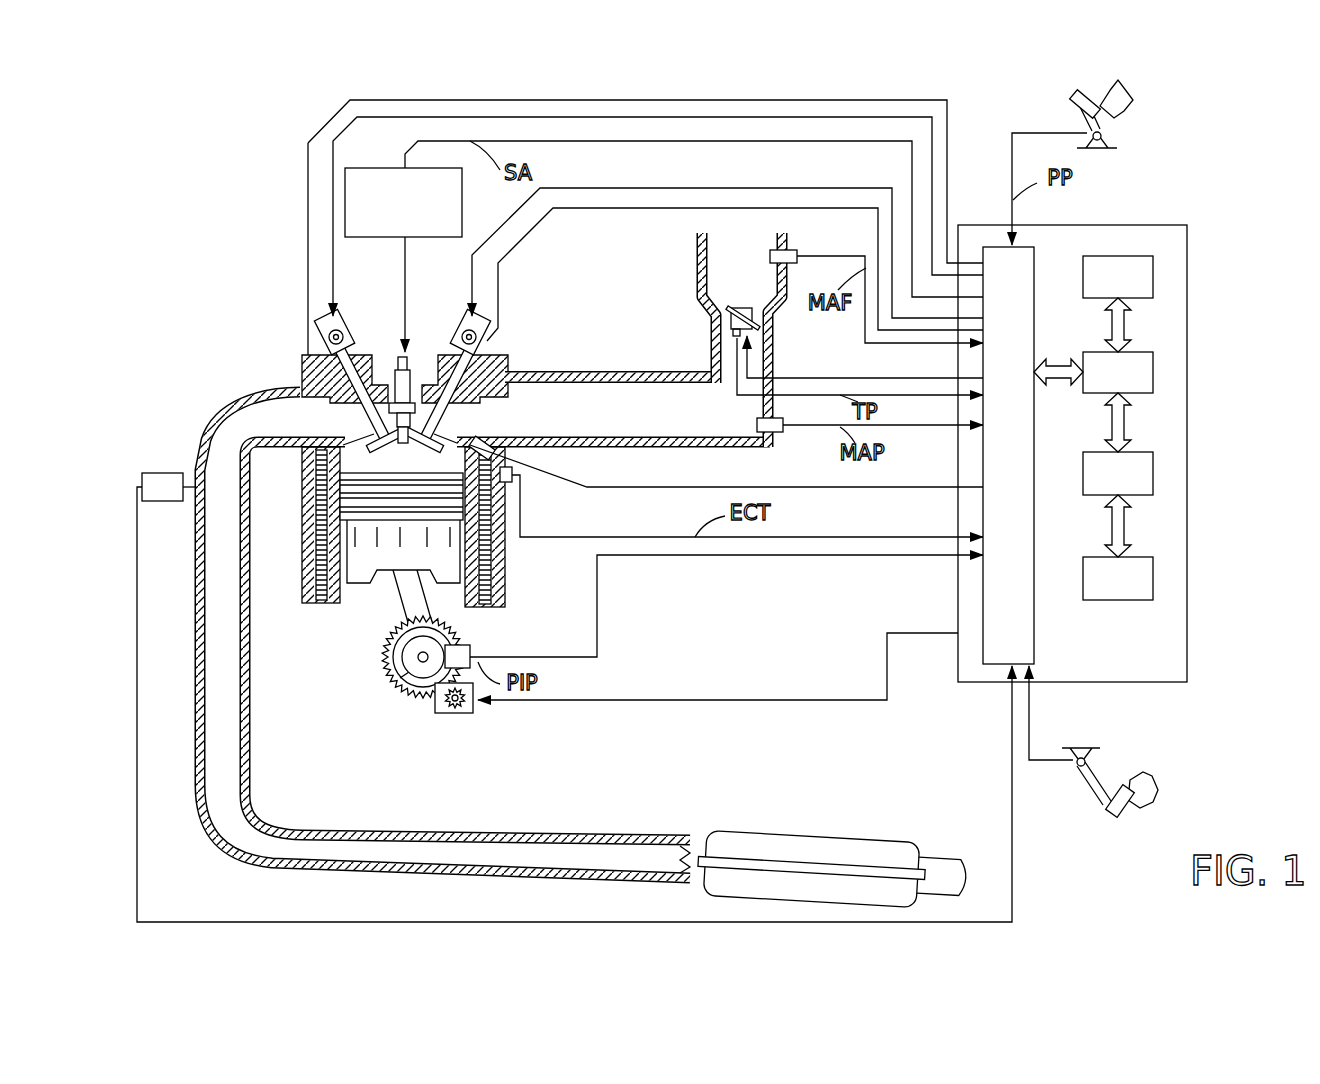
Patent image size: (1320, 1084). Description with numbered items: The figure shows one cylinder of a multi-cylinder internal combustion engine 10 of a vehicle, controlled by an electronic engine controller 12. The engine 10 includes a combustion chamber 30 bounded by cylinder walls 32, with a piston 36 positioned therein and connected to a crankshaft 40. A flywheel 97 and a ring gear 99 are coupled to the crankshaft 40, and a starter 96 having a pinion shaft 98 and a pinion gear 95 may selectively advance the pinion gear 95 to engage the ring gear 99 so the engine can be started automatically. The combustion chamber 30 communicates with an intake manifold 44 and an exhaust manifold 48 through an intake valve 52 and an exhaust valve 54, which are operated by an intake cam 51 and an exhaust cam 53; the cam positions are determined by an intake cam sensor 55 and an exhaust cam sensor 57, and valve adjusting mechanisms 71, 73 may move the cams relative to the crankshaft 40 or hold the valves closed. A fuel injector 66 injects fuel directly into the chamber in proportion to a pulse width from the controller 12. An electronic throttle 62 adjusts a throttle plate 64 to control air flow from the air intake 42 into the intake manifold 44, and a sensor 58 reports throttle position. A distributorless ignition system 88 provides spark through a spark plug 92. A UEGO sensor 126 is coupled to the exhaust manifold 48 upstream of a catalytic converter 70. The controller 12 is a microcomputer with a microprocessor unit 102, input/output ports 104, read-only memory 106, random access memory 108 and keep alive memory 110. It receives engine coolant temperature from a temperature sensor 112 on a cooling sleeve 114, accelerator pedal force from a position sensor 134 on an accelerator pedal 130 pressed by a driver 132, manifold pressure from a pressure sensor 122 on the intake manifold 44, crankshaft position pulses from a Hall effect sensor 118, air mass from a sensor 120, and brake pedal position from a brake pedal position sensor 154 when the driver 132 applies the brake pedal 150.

The internal combustion engine 10 is at (233, 306).
The electronic engine controller 12 is at (1119, 437).
The combustion chamber 30 is at (320, 553).
The cylinder walls 32 is at (345, 600).
The piston 36 is at (378, 578).
The crankshaft 40 is at (408, 690).
The air intake 42 is at (728, 282).
The intake manifold 44 is at (663, 420).
The exhaust manifold 48 is at (280, 425).
The intake cam 51 is at (457, 320).
The intake valve 52 is at (457, 420).
The exhaust cam 53 is at (345, 322).
The exhaust valve 54 is at (298, 412).
The intake cam sensor 55 is at (490, 347).
The exhaust cam sensor 57 is at (330, 347).
The throttle position sensor 58 is at (730, 338).
The electronic throttle 62 is at (757, 313).
The throttle plate 64 is at (727, 312).
The fuel injector 66 is at (492, 452).
The catalytic converter 70 is at (722, 832).
The valve adjusting mechanism 71 is at (458, 340).
The valve adjusting mechanism 73 is at (350, 337).
The distributorless ignition system 88 is at (362, 168).
The spark plug 92 is at (409, 352).
The pinion gear 95 is at (466, 716).
The starter 96 is at (470, 715).
The flywheel 97 is at (398, 668).
The pinion shaft 98 is at (448, 713).
The ring gear 99 is at (420, 703).
The microprocessor unit 102 is at (1153, 370).
The input/output ports 104 is at (1034, 258).
The read-only memory 106 is at (1153, 275).
The random access memory 108 is at (1153, 470).
The keep alive memory 110 is at (1153, 575).
The temperature sensor 112 is at (513, 481).
The cooling sleeve 114 is at (486, 556).
The Hall effect sensor 118 is at (470, 647).
The air mass sensor 120 is at (790, 250).
The pressure sensor 122 is at (780, 433).
The Universal Exhaust Gas Oxygen (UEGO) sensor 126 is at (142, 480).
The accelerator pedal 130 is at (1080, 110).
The driver 132 is at (1130, 97).
The position sensor 134 is at (1100, 140).
The brake pedal 150 is at (1097, 805).
The brake pedal position sensor 154 is at (1070, 752).